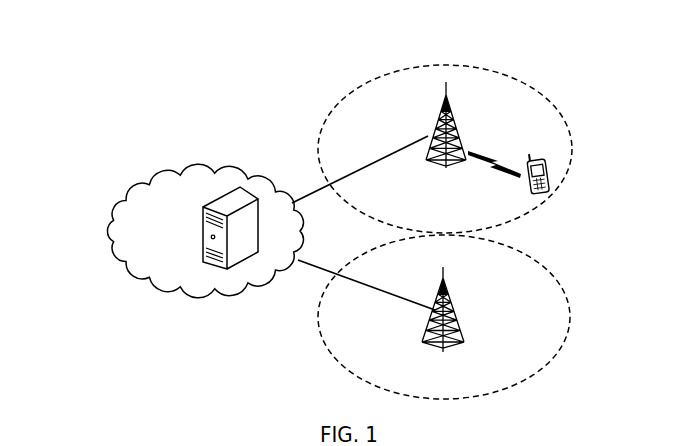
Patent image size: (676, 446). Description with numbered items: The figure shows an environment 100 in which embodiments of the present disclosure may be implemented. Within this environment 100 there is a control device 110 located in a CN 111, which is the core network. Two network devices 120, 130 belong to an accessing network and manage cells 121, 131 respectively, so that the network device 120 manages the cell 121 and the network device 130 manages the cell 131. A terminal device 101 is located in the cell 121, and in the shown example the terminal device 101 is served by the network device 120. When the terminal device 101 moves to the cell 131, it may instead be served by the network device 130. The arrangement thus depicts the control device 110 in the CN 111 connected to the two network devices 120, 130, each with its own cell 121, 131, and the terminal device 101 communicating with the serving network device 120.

The environment 100 is at (139, 46).
The terminal device 101 is at (547, 178).
The control device 110 is at (203, 238).
The CN 111 is at (110, 210).
The network device 120 is at (457, 138).
The cell 121 is at (565, 127).
The network device 130 is at (460, 322).
The cell 131 is at (567, 322).